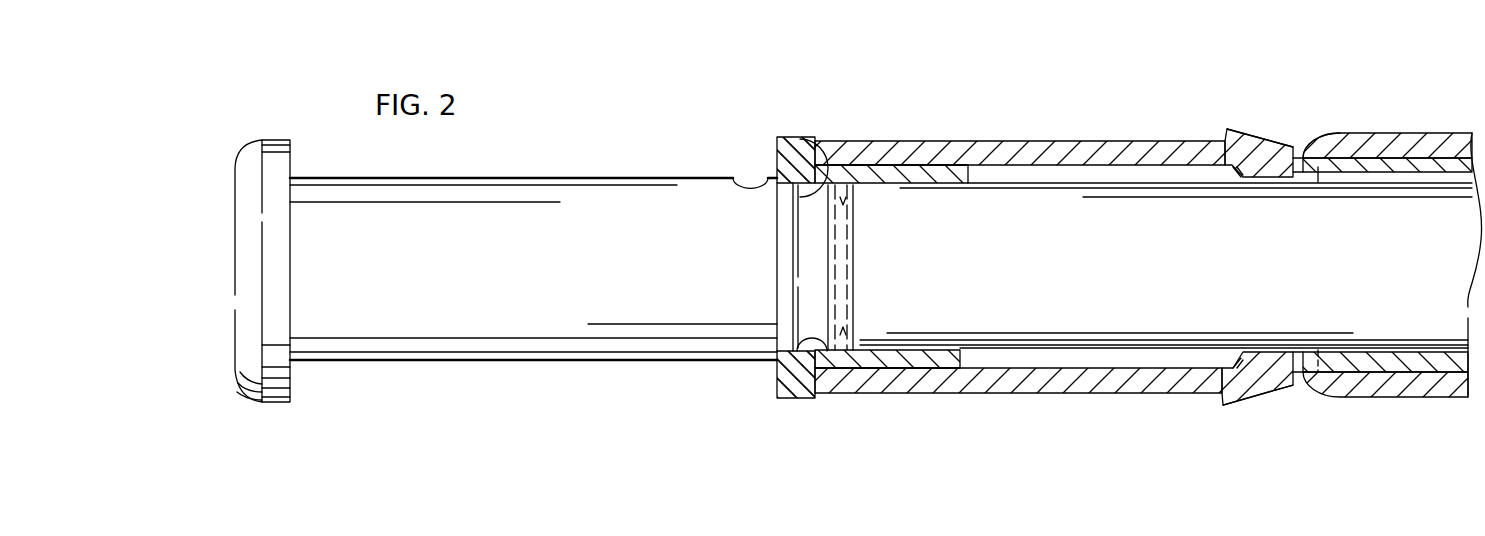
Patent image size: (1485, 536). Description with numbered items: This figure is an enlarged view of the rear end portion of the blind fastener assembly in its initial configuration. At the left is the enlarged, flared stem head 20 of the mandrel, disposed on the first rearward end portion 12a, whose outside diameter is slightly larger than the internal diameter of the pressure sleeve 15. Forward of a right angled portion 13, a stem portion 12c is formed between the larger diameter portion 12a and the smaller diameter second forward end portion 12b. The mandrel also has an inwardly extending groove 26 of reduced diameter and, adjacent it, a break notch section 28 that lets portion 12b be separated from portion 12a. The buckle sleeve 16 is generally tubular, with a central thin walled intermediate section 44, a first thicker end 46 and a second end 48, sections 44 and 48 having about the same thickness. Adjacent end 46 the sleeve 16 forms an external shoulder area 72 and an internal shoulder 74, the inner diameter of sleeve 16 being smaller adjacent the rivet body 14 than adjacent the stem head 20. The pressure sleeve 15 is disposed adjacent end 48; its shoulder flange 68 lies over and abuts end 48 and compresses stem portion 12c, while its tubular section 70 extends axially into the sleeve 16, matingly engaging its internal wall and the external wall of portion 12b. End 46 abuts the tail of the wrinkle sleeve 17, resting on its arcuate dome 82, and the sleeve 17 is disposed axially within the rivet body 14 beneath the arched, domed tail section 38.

The stem head 20 is at (278, 138).
The first rearward end portion 12a is at (660, 232).
The right angled portion 13 is at (733, 178).
The stem portion 12c is at (777, 200).
The shoulder flange 68 is at (786, 136).
The groove 26 is at (803, 140).
The second end 48 is at (833, 139).
The break notch section 28 is at (863, 140).
The pressure sleeve 15 is at (897, 167).
The tubular section 70 is at (947, 172).
The second forward end portion 12b is at (1008, 215).
The intermediate section 44 is at (1062, 157).
The buckle sleeve 16 is at (1107, 140).
The external shoulder area 72 is at (1227, 138).
The first thicker end 46 is at (1250, 140).
The arcuate dome 82 is at (1305, 155).
The domed tail section 38 is at (1337, 137).
The rivet body 14 is at (1375, 132).
The wrinkle sleeve 17 is at (1430, 167).
The internal shoulder 74 is at (1233, 173).